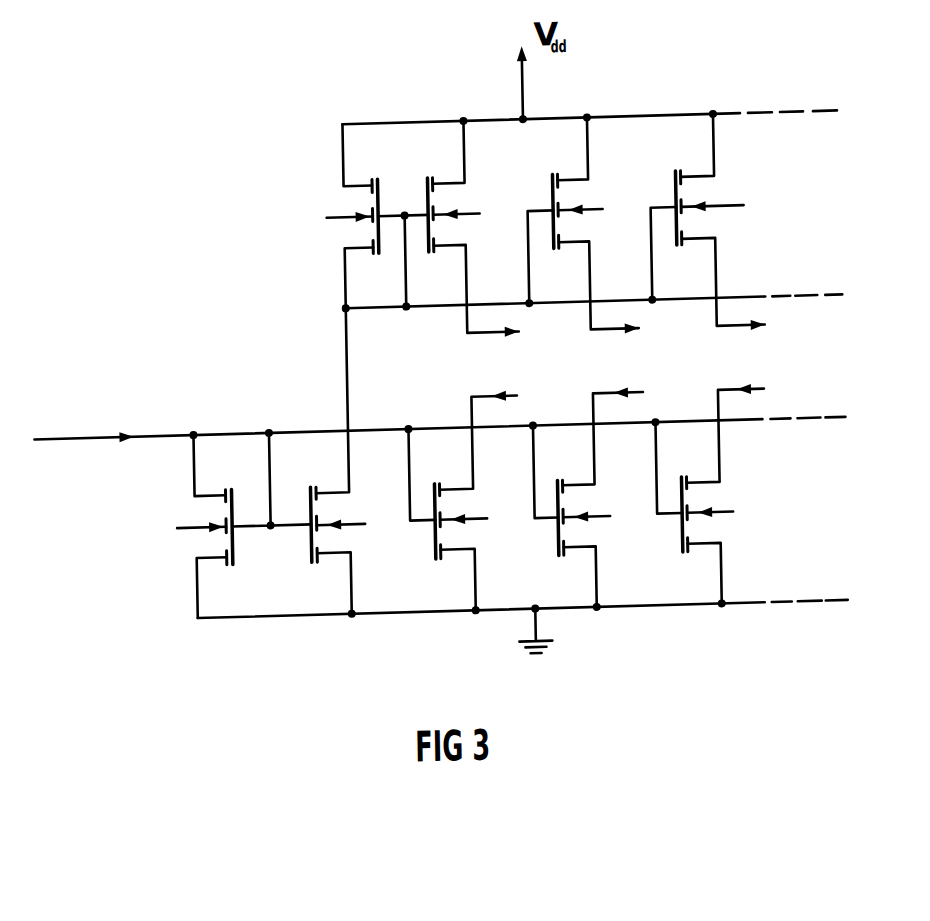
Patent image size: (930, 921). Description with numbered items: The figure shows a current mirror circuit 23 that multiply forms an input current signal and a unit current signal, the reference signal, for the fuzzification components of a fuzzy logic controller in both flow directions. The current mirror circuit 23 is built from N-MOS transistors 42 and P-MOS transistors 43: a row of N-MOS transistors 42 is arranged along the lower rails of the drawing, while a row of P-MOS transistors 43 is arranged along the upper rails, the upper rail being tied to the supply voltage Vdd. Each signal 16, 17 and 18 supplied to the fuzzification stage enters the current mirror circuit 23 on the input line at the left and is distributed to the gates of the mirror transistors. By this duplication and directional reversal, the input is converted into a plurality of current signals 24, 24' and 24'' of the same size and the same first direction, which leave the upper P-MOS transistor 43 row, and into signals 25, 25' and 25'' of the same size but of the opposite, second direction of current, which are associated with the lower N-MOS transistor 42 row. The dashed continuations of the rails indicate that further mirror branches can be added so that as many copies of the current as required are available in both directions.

The signal 16 is at (435, 403).
The signal 17 is at (435, 403).
The signal 18 is at (83, 424).
The current mirror circuit 23 is at (428, 481).
The current signal 24 is at (469, 301).
The current signal 24' is at (587, 297).
The current signal 24'' is at (712, 295).
The signal 25 is at (471, 432).
The signal 25' is at (590, 427).
The signal 25'' is at (714, 426).
The N-MOS transistor 42 is at (217, 536).
The P-MOS transistor 43 is at (370, 200).